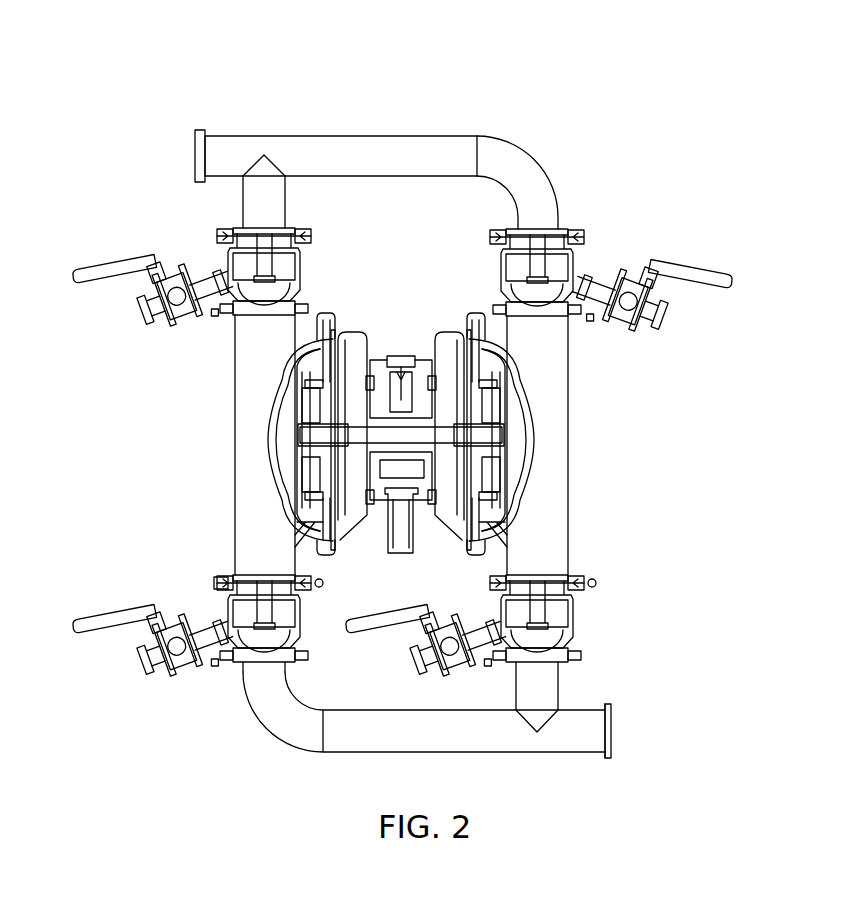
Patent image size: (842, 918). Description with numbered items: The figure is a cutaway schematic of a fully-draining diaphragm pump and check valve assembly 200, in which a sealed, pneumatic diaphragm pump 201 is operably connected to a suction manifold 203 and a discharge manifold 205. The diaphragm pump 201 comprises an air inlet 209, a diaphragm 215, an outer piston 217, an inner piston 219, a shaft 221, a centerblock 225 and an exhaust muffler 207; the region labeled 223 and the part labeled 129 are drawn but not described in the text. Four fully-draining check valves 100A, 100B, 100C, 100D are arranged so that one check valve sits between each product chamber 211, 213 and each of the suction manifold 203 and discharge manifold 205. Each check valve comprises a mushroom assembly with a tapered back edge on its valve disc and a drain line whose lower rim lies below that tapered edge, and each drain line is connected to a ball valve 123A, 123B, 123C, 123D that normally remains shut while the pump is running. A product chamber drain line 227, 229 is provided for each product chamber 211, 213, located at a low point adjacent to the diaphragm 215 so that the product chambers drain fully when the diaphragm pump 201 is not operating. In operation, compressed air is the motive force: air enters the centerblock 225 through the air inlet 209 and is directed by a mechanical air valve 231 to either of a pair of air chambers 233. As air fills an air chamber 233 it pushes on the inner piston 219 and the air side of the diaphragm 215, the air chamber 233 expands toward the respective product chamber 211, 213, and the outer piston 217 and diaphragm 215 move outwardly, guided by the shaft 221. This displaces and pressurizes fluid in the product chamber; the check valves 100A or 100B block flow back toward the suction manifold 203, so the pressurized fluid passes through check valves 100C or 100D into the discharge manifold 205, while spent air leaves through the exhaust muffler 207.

The fully-draining diaphragm pump and check valve assembly 200 is at (623, 108).
The diaphragm pump 201 is at (377, 512).
The suction manifold 203 is at (607, 712).
The discharge manifold 205 is at (292, 136).
The exhaust muffler 207 is at (405, 553).
The air inlet 209 is at (417, 347).
The product chamber 211 is at (235, 412).
The product chamber 213 is at (557, 372).
The diaphragm 215 is at (300, 345).
The outer piston 217 is at (322, 384).
The inner piston 219 is at (336, 352).
The shaft 221 is at (357, 417).
The right outer chamber 223 is at (456, 355).
The centerblock 225 is at (430, 471).
The product chamber drain line 227 is at (503, 522).
The product chamber drain line 229 is at (293, 534).
The mechanical air valve 231 is at (402, 400).
The air chamber 233 is at (347, 352).
The fully-draining check valve 100A is at (583, 607).
The fully-draining check valve 100B is at (230, 608).
The fully-draining check valve 100C is at (228, 262).
The fully-draining check valve 100D is at (575, 250).
The ball valve 123A is at (457, 670).
The ball valve 123B is at (170, 690).
The ball valve 123C is at (185, 338).
The ball valve 123D is at (705, 264).
The clamp 129 is at (214, 576).